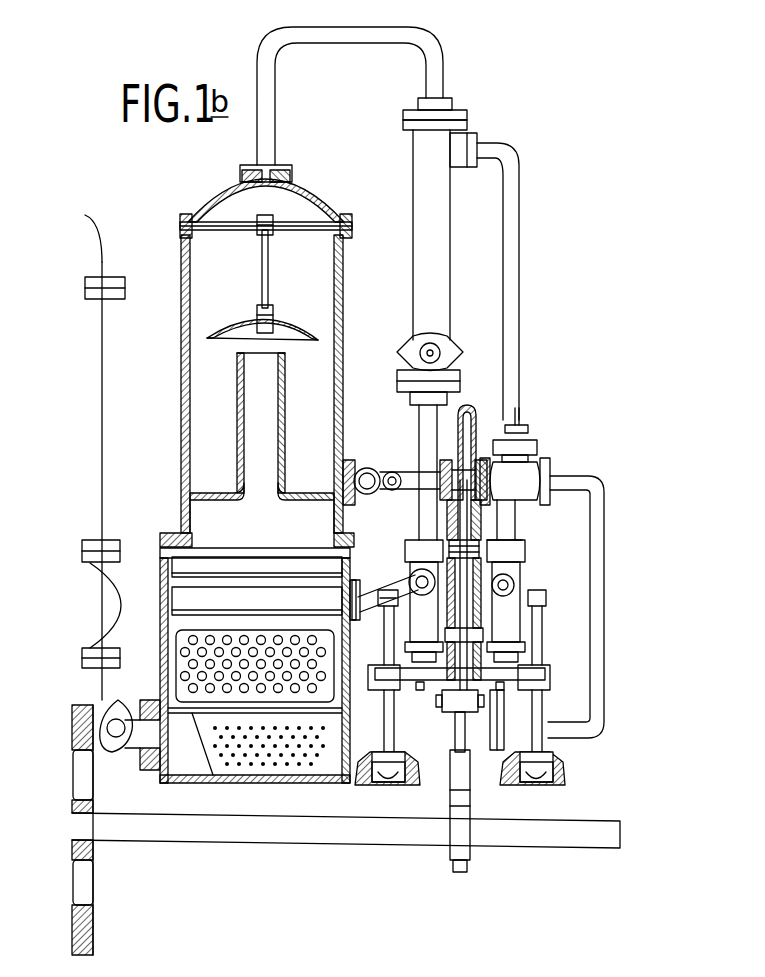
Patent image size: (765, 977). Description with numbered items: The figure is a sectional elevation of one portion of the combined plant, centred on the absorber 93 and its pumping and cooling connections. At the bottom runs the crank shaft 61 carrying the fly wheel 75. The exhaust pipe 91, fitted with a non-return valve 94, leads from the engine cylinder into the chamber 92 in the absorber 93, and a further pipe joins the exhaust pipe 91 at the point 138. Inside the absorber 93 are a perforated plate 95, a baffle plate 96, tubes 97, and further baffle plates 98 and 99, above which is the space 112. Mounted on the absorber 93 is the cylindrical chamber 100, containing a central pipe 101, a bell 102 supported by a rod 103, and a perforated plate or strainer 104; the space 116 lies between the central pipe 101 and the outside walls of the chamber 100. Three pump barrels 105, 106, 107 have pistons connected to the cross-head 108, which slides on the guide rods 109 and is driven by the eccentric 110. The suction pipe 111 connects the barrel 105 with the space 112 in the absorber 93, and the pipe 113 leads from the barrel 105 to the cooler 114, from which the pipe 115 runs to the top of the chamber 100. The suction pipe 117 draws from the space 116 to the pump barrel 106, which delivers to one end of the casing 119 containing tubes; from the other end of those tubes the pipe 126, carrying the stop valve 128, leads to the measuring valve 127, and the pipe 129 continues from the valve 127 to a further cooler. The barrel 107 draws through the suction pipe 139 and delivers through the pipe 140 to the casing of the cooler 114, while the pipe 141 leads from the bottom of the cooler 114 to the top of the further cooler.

The crank shaft 61 is at (346, 830).
The fly wheel 75 is at (93, 912).
The exhaust pipe 91 is at (102, 388).
The chamber 92 is at (192, 744).
The absorber 93 is at (160, 615).
The non-return valve 94 is at (102, 605).
The perforated plate 95 is at (269, 753).
The baffle plate 96 is at (255, 717).
The tubes 97 is at (184, 656).
The baffle plate 98 is at (257, 601).
The baffle plate 99 is at (257, 570).
The cylindrical chamber 100 is at (181, 438).
The central pipe 101 is at (237, 415).
The bell 102 is at (272, 327).
The rod 103 is at (268, 278).
The perforated plate or strainer 104 is at (306, 224).
The pump barrel 105 is at (405, 549).
The pump barrel 106 is at (447, 548).
The pump barrel 107 is at (512, 560).
The cross-head 108 is at (442, 690).
The guide rods 109 is at (372, 720).
The eccentric 110 is at (470, 803).
The suction pipe 111 is at (380, 598).
The space 112 is at (320, 600).
The pipe 113 is at (419, 432).
The cooler 114 is at (445, 235).
The pipe 115 is at (372, 40).
The space 116 is at (262, 467).
The suction pipe 117 is at (370, 465).
The casing 119 is at (455, 750).
The pipe 126 is at (576, 607).
The measuring valve 127 is at (487, 495).
The stop valve 128 is at (515, 474).
The pipe 129 is at (392, 490).
The junction 138 is at (116, 738).
The suction pipe 139 is at (508, 585).
The delivery pipe 140 is at (518, 297).
The pipe 141 is at (440, 348).